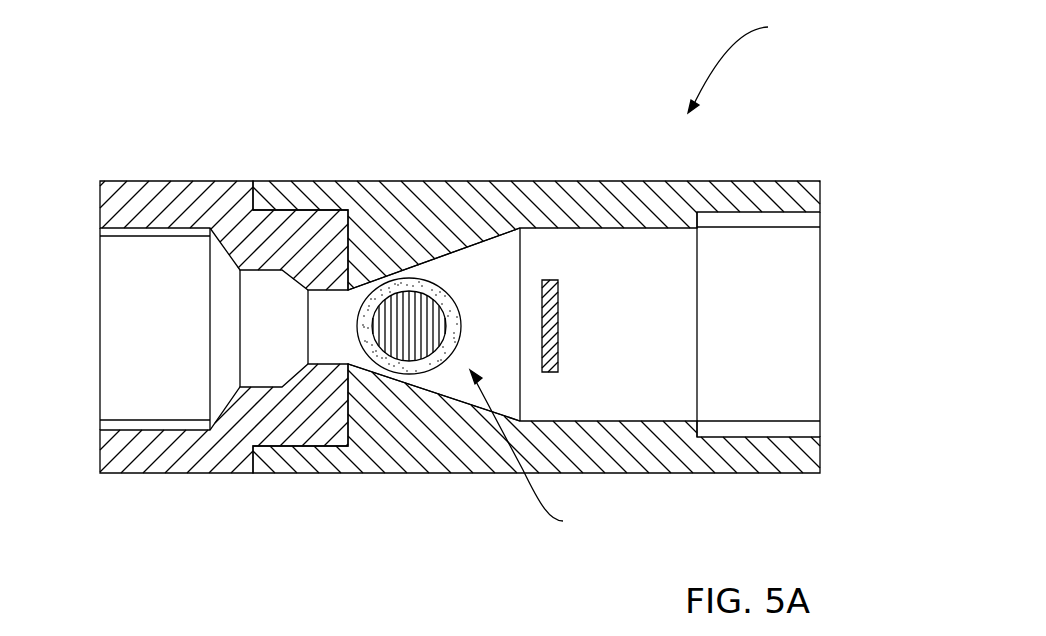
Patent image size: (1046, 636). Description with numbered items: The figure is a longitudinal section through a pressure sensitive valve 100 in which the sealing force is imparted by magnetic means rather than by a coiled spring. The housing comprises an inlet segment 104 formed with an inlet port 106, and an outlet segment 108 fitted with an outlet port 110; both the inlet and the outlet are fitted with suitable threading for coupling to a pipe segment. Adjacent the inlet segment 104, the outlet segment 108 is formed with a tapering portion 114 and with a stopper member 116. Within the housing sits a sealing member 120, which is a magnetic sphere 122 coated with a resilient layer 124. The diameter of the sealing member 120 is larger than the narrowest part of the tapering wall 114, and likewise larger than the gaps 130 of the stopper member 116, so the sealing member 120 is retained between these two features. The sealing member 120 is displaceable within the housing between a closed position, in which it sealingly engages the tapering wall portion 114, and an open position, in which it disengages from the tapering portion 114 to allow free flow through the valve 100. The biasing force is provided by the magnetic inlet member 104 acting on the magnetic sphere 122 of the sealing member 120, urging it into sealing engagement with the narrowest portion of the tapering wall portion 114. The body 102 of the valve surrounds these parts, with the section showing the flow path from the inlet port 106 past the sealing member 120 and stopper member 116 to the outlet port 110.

The pressure sensitive valve 100 is at (749, 63).
The body 102 is at (503, 180).
The inlet segment 104 is at (183, 453).
The inlet port 106 is at (125, 363).
The outlet segment 108 is at (715, 193).
The outlet port 110 is at (770, 323).
The tapering portion 114 is at (455, 278).
The stopper member 116 is at (548, 281).
The sealing member 120 is at (536, 452).
The magnetic sphere 122 is at (413, 368).
The resilient layer 124 is at (373, 360).
The gaps 130 is at (570, 398).